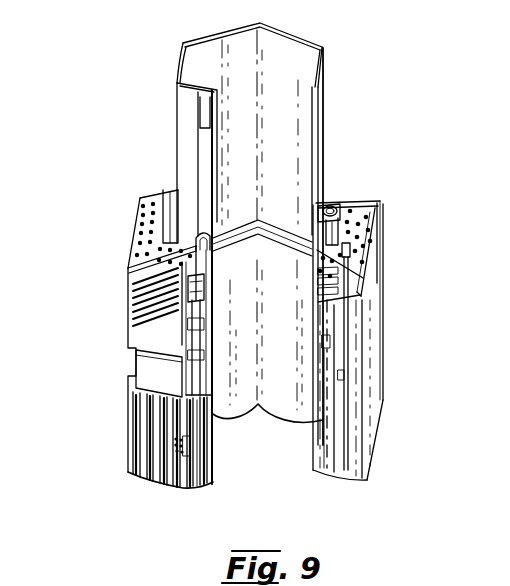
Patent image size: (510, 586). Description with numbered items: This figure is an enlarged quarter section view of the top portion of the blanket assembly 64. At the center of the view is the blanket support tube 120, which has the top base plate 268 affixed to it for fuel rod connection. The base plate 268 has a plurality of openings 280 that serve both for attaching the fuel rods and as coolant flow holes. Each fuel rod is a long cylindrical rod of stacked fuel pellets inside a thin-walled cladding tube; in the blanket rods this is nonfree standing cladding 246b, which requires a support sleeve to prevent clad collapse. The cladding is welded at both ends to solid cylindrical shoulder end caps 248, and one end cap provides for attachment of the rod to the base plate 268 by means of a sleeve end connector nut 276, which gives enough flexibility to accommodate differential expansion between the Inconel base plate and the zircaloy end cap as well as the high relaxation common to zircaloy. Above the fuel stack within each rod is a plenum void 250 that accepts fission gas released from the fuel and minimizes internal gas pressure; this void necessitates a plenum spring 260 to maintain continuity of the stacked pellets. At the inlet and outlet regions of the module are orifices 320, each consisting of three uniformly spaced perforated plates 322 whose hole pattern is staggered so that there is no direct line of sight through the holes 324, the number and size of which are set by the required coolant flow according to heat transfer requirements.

The blanket assembly 64 is at (108, 300).
The blanket support tube 120 is at (192, 135).
The orifices 320 is at (357, 210).
The holes 324 is at (373, 210).
The top base plate 268 is at (365, 297).
The openings 280 is at (323, 331).
The sleeve end connector nut 276 is at (318, 402).
The perforated plates 322 is at (196, 278).
The shoulder end caps 248 is at (168, 414).
The plenum void 250 is at (172, 452).
The plenum spring 260 is at (185, 458).
The nonfree standing cladding 246b is at (188, 486).